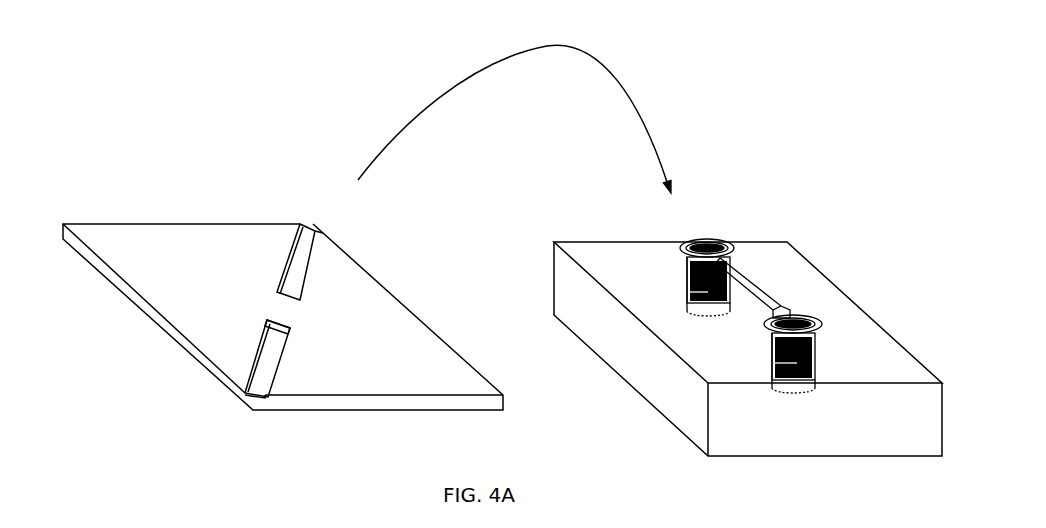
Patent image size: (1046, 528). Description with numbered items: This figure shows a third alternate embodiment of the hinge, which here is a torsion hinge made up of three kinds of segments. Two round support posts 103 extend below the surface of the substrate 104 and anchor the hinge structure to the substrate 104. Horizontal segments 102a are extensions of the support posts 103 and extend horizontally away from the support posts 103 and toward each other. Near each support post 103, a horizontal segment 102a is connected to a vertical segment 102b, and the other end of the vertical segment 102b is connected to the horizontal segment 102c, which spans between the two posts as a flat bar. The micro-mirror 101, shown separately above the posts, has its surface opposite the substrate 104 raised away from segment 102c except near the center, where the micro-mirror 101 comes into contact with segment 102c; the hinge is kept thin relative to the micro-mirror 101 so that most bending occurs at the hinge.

The micro-mirror 101 is at (180, 249).
The horizontal segment 102a is at (730, 250).
The vertical segment 102b is at (687, 262).
The horizontal segment 102c is at (750, 274).
The support post 103 is at (690, 292).
The substrate 104 is at (853, 347).